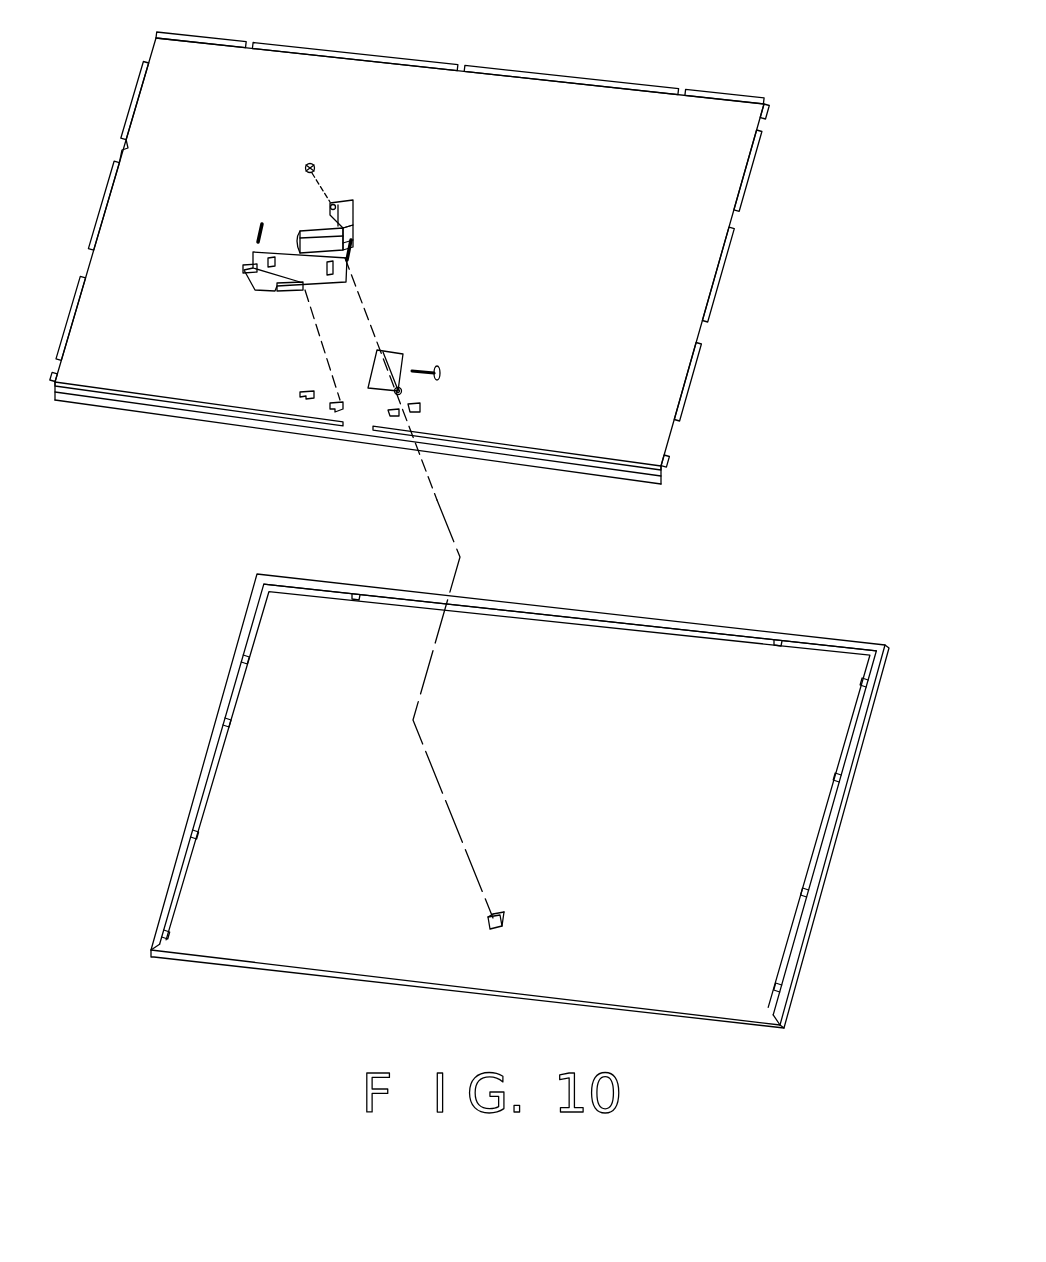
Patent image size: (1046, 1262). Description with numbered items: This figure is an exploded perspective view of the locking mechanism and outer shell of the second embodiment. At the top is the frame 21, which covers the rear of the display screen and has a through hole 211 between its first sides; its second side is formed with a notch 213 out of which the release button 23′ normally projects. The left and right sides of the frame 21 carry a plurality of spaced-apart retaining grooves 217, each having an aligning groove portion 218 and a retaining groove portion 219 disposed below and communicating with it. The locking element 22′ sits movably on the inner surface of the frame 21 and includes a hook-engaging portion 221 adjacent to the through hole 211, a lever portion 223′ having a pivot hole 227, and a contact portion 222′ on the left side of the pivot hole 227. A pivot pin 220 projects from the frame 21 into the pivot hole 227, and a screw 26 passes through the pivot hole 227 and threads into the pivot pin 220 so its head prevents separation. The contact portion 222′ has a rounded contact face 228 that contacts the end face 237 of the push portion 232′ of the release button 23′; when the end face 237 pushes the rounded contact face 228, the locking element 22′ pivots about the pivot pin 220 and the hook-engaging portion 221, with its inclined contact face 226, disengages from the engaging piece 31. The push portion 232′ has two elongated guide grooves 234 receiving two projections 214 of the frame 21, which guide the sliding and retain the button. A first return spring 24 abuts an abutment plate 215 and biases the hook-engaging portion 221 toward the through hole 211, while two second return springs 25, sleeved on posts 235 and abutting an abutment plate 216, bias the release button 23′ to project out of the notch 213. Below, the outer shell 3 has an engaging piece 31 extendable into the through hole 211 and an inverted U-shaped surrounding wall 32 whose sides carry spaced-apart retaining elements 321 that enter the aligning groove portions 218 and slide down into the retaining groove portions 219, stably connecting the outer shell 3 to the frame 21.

The frame 21 is at (190, 425).
The retaining grooves 217 is at (118, 160).
The aligning groove portion 218 is at (128, 148).
The retaining groove portion 219 is at (112, 168).
The locking element 22′ is at (368, 220).
The hook-engaging portion 221 is at (342, 210).
The inclined contact face 226 is at (334, 205).
The lever portion 223′ is at (318, 232).
The contact portion 222′ is at (300, 242).
The pivot hole 227 is at (350, 236).
The screw 26 is at (309, 163).
The release button 23′ is at (275, 290).
The push portion 232′ is at (250, 270).
The guide grooves 234 is at (270, 278).
The rounded contact face 228 is at (290, 290).
The posts 235 is at (340, 272).
The end face 237 is at (255, 238).
The second return springs 25 is at (355, 255).
The through hole 211 is at (395, 345).
The pivot pin 220 is at (402, 392).
The first return spring 24 is at (424, 370).
The abutment plate 215 is at (442, 371).
The abutment plate 216 is at (300, 395).
The projections 214 is at (336, 410).
The notch 213 is at (370, 430).
The outer shell 3 is at (740, 613).
The surrounding wall 32 is at (630, 615).
The retaining elements 321 is at (205, 830).
The engaging piece 31 is at (504, 924).